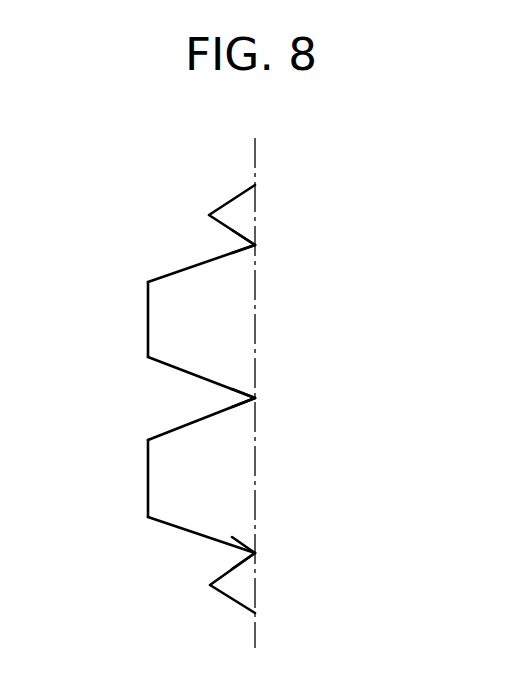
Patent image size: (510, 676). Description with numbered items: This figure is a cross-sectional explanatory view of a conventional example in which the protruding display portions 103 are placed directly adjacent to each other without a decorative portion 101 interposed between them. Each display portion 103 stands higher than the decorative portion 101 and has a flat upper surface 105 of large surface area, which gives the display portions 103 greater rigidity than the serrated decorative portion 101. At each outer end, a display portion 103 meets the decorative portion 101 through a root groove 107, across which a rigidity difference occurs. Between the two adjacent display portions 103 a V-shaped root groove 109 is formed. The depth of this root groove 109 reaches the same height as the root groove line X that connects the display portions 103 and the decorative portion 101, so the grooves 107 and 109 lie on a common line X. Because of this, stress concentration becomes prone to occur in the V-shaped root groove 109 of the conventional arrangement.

The root groove line X is at (257, 147).
The decorative portion 101 is at (233, 206).
The display portion 103 is at (168, 325).
The upper surface 105 is at (147, 296).
The root groove 107 is at (257, 243).
The V-shaped root groove 109 is at (257, 397).